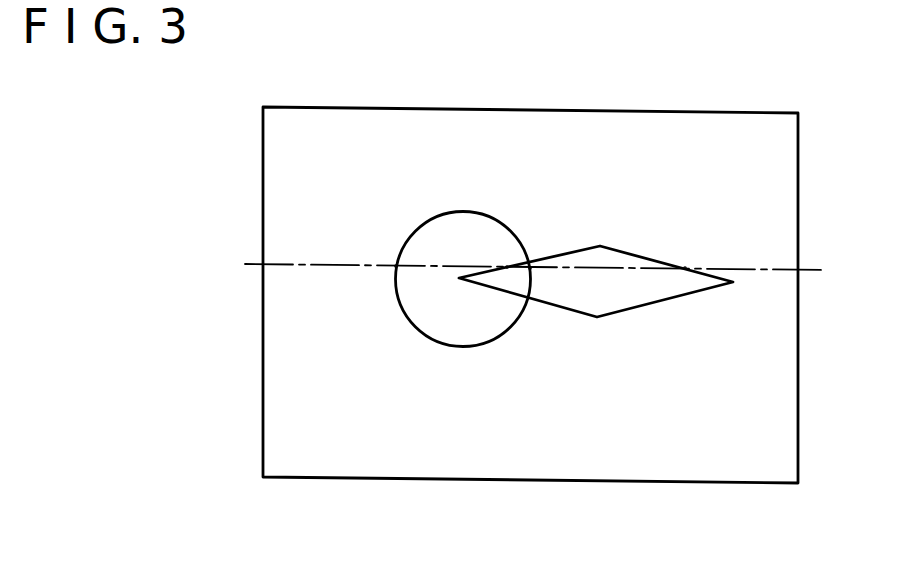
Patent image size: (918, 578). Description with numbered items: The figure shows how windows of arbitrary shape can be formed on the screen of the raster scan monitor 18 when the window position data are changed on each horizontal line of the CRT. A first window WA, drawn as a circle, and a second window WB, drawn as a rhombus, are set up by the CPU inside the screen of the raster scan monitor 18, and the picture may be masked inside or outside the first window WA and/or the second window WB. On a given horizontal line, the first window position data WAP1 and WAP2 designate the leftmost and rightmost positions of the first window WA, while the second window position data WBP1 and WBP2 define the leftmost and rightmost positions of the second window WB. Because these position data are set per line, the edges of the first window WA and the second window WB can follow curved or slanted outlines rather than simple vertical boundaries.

The raster scan monitor 18 is at (783, 190).
The first window WA is at (481, 214).
The second window WB is at (645, 258).
The first window position data WAP1 is at (395, 264).
The first window position data WAP2 is at (531, 271).
The second window position data WBP1 is at (508, 265).
The second window position data WBP2 is at (684, 268).